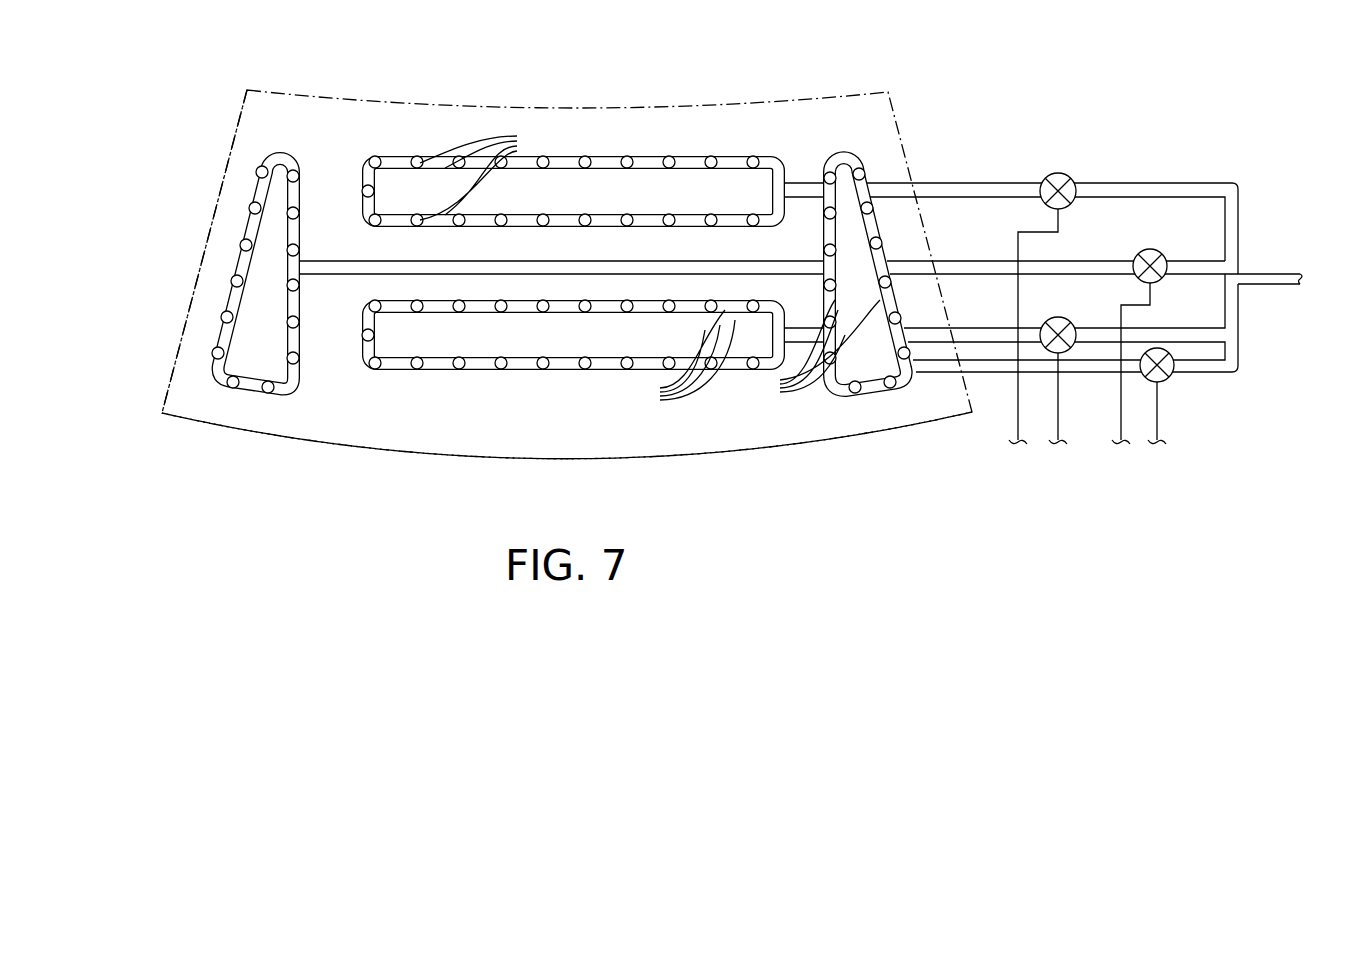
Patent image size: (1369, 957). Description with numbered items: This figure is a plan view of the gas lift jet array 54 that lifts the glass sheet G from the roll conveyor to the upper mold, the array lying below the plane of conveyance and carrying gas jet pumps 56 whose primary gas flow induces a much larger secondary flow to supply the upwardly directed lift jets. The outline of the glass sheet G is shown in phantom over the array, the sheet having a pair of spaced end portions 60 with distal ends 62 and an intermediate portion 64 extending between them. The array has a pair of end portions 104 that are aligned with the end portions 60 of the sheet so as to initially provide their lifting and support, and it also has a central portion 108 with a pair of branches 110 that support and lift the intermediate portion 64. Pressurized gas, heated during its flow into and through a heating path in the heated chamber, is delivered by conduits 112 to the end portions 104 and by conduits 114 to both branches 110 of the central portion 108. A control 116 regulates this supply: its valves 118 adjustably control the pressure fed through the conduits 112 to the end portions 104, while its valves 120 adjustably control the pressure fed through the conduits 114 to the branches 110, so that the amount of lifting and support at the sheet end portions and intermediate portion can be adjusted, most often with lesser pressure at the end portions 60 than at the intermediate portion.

The glass sheet G is at (236, 115).
The gas lift jet array 54 is at (810, 407).
The gas jet pumps 56 is at (650, 269).
The end portions 60 is at (208, 292).
The distal ends 62 is at (178, 333).
The intermediate portion 64 is at (566, 428).
The end portions 104 is at (245, 213).
The central portion 108 is at (572, 148).
The branches 110 is at (565, 228).
The conduits 112 is at (1192, 259).
The conduits 114 is at (1131, 183).
The control 116 is at (1276, 468).
The valves 118 is at (1148, 249).
The valves 120 is at (1067, 178).